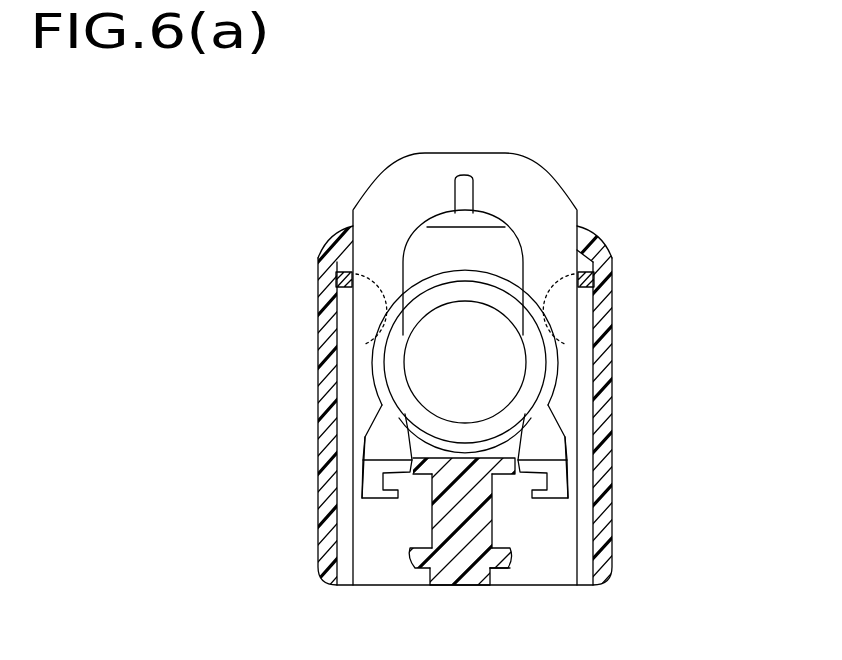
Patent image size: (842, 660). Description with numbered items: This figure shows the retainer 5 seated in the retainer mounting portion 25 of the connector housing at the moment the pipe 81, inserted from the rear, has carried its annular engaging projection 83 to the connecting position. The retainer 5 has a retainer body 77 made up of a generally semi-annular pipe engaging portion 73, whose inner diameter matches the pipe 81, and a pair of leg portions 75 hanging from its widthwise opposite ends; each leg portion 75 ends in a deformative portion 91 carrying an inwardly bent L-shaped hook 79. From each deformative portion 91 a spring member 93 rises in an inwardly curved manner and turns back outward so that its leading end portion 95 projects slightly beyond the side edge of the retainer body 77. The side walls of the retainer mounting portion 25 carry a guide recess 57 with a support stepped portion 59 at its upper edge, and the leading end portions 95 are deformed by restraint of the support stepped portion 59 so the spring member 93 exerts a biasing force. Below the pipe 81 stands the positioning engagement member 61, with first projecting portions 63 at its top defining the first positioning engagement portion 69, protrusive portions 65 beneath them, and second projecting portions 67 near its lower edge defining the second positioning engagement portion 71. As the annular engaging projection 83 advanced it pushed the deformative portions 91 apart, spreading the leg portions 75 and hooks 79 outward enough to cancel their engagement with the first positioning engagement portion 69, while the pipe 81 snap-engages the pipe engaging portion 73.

The retainer 5 is at (381, 181).
The retainer mounting portion 25 is at (600, 227).
The guide recess 57 is at (342, 350).
The support stepped portion 59 is at (335, 292).
The positioning engagement member 61 is at (461, 576).
The first projecting portions 63 is at (412, 470).
The protrusive portions 65 is at (412, 477).
The second projecting portions 67 is at (408, 556).
The first positioning engagement portion 69 is at (495, 572).
The second positioning engagement portion 71 is at (470, 560).
The pipe engaging portion 73 is at (530, 186).
The leg portions 75 is at (382, 405).
The retainer body 77 is at (568, 190).
The hook 79 is at (365, 458).
The pipe 81 is at (465, 362).
The annular engaging projection 83 is at (533, 352).
The deformative portion 91 is at (397, 427).
The spring member 93 is at (358, 336).
The leading end portion 95 is at (320, 259).